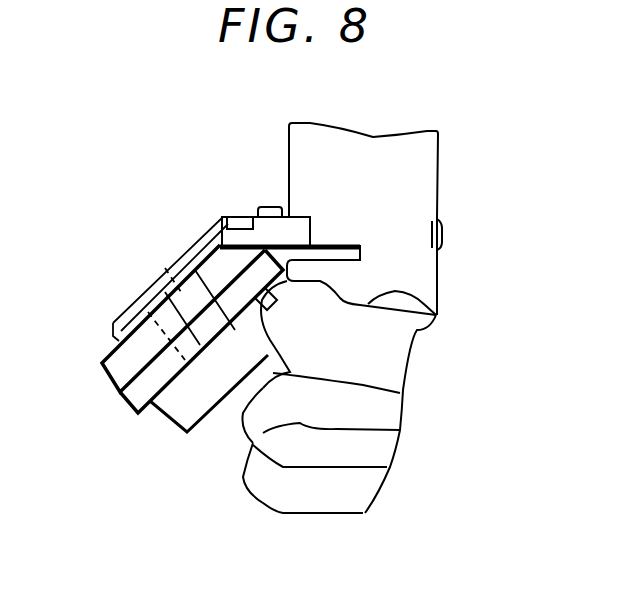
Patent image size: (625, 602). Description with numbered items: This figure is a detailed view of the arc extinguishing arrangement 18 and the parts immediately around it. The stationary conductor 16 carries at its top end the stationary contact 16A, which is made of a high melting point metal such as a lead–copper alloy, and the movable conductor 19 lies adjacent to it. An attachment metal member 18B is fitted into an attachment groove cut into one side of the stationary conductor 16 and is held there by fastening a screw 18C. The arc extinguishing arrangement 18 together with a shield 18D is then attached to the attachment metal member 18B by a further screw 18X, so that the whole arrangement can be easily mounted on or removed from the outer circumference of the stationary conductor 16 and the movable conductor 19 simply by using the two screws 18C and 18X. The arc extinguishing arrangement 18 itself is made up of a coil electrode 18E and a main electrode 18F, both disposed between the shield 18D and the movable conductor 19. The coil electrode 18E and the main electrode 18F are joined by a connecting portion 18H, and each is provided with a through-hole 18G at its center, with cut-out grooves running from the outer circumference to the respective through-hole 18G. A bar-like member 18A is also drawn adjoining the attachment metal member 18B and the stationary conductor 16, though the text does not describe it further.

The stationary conductor 16 is at (425, 168).
The stationary contact 16A is at (400, 300).
The arc extinguishing arrangement 18 is at (170, 147).
The contact bar 18A is at (362, 256).
The attachment metal member 18B is at (301, 230).
The screw 18C is at (441, 228).
The shield 18D is at (124, 318).
The coil electrode 18E is at (113, 370).
The main electrode 18F is at (147, 400).
The through-hole 18G is at (202, 353).
The connecting portion 18H is at (173, 290).
The screw 18X is at (268, 206).
The movable conductor 19 is at (397, 342).